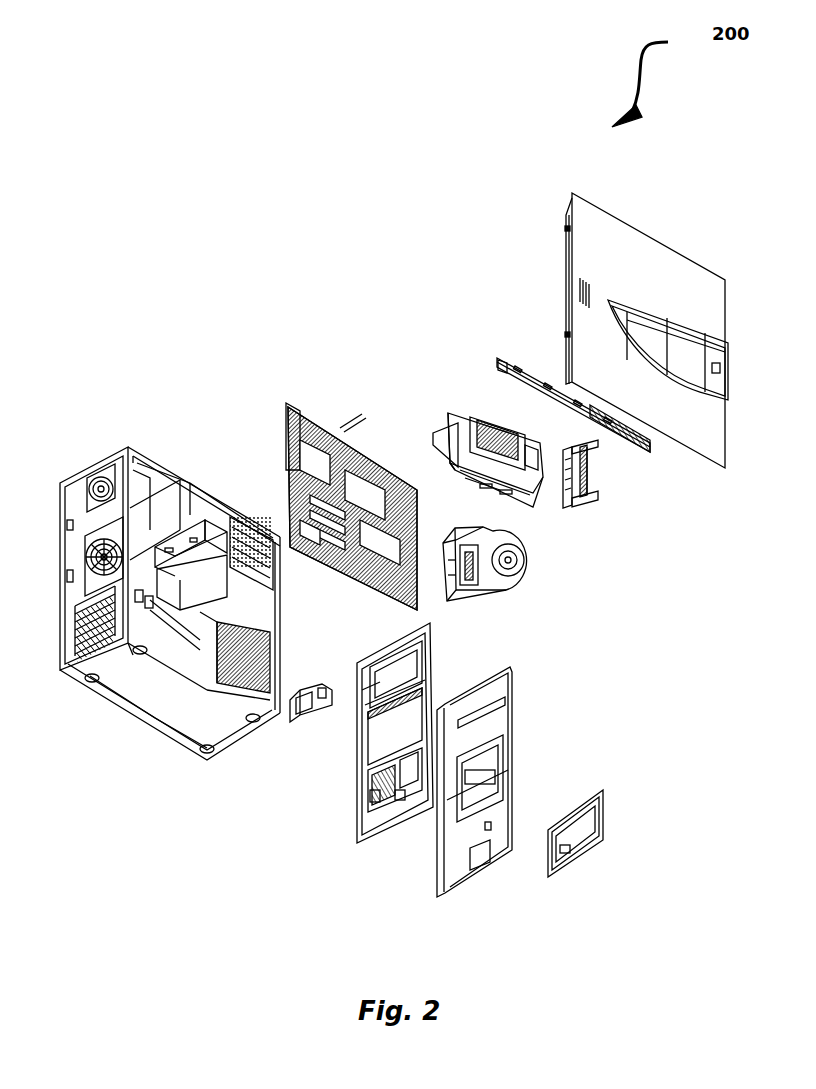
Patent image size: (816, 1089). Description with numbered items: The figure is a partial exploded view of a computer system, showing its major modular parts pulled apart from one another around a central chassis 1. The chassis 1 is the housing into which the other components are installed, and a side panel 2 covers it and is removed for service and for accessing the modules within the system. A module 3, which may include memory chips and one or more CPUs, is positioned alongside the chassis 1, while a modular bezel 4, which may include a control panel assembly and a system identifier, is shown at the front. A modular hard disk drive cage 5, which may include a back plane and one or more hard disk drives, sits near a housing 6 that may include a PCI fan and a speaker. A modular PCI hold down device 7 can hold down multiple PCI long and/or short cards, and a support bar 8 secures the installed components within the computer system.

The chassis 1 is at (169, 533).
The side panel 2 is at (552, 330).
The module 3 is at (326, 461).
The modular bezel 4 is at (543, 848).
The modular hard disk drive cage 5 is at (444, 412).
The housing 6 is at (533, 564).
The modular PCI hold down device 7 is at (634, 479).
The support bar 8 is at (553, 372).